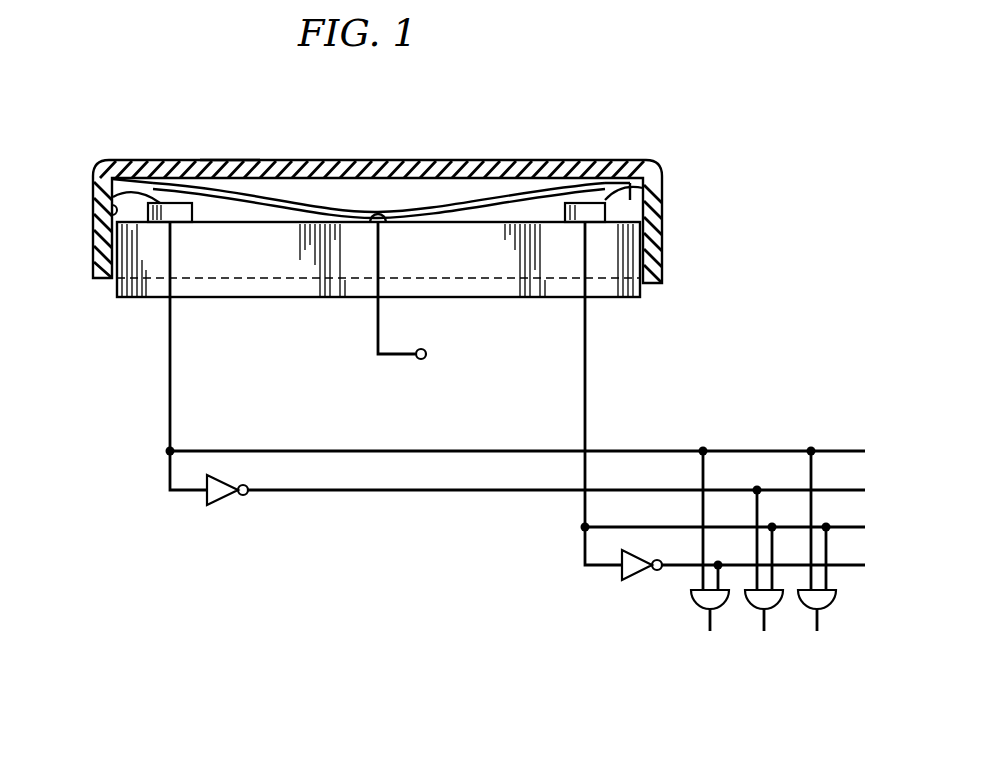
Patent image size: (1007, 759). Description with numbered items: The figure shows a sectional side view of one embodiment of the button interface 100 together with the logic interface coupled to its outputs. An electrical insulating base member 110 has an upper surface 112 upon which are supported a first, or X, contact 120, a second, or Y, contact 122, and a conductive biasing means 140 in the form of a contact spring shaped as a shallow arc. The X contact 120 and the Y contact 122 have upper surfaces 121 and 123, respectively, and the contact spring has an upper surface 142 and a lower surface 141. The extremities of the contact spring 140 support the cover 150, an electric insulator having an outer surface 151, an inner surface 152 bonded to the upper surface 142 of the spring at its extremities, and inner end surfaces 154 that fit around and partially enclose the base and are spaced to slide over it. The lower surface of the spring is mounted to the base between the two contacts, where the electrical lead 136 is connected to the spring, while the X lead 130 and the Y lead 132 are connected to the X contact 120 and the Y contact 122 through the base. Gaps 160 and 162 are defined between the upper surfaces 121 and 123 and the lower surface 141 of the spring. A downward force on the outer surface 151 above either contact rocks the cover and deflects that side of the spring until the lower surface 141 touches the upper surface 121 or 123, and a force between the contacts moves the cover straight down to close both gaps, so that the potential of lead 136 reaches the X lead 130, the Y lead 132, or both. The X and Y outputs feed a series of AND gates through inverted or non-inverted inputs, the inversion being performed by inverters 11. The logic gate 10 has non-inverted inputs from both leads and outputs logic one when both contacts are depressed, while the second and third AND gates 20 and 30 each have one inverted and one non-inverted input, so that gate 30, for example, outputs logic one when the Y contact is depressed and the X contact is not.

The switch assembly 100 is at (700, 108).
The cover 150 is at (517, 168).
The outer surface 151 is at (232, 162).
The upper surface 121 is at (110, 177).
The upper surface 123 is at (585, 203).
The electrical insulating base member 110 is at (485, 292).
The upper surface 142 is at (272, 203).
The conductive biasing means 140 is at (320, 210).
The lower surface 141 is at (272, 213).
The inner surface 152 is at (250, 190).
The upper surface 112 is at (213, 221).
The electrical lead 136 is at (377, 208).
The first contact 120 is at (160, 225).
The second contact 122 is at (606, 225).
The gap 160 is at (113, 197).
The gap 162 is at (643, 188).
The inner end surface 154 is at (110, 216).
The X lead 130 is at (172, 372).
The Y lead 132 is at (587, 372).
The inverter 11 is at (218, 502).
The third AND gate 30 is at (720, 608).
The second AND gate 20 is at (775, 608).
The logic gate 10 is at (830, 608).